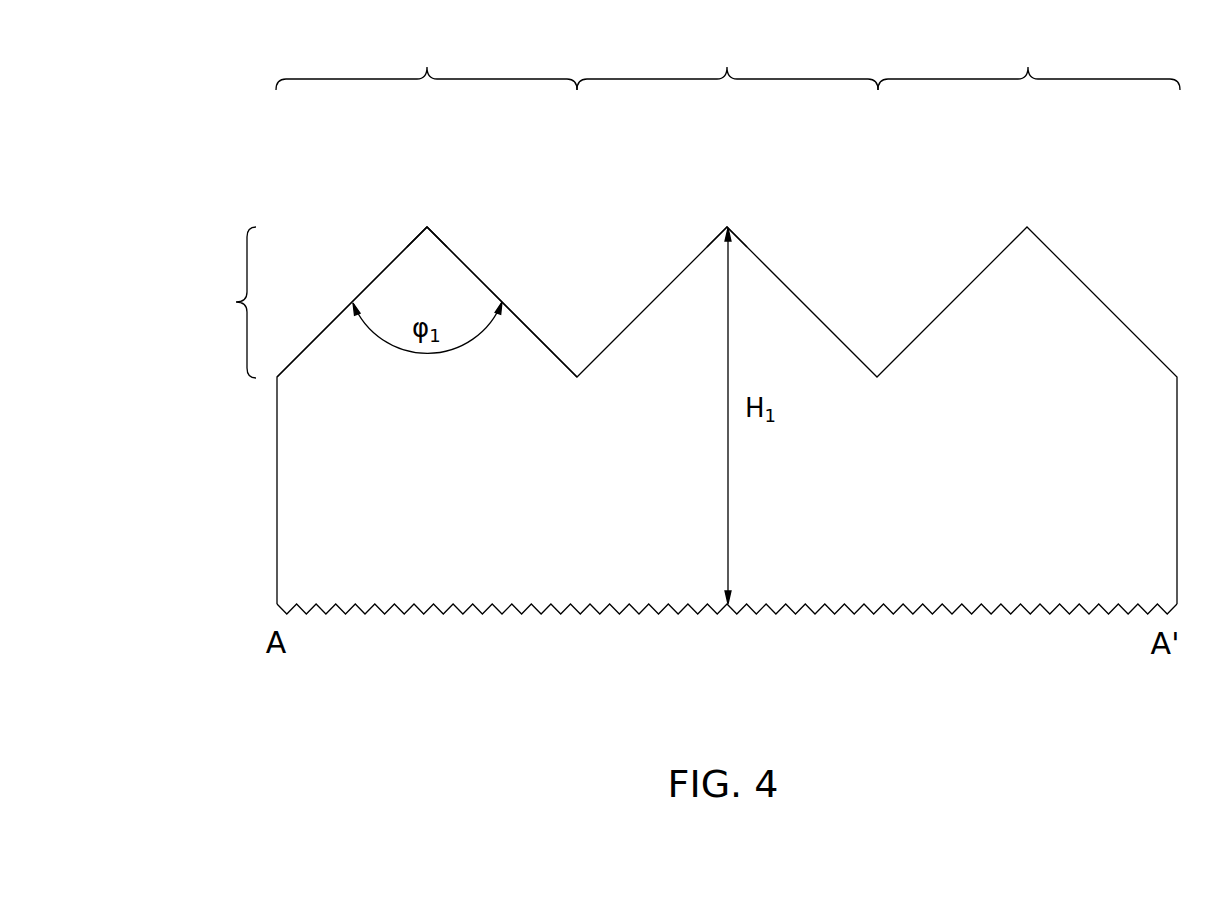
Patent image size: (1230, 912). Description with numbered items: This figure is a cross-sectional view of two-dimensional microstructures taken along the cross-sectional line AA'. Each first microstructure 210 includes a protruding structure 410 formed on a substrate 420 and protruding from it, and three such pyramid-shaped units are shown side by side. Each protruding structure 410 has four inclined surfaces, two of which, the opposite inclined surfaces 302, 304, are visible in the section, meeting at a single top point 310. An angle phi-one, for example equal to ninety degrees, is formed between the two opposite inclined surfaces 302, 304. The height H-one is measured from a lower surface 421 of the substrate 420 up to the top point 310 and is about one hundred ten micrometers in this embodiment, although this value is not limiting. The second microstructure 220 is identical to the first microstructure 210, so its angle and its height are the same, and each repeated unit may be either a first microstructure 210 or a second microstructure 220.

The first microstructure 210 is at (728, 61).
The second microstructure 220 is at (728, 61).
The inclined surface 302 is at (317, 336).
The inclined surface 304 is at (540, 340).
The top point 310 is at (427, 227).
The protruding structure 410 is at (215, 302).
The substrate 420 is at (297, 453).
The lower surface 421 is at (776, 614).